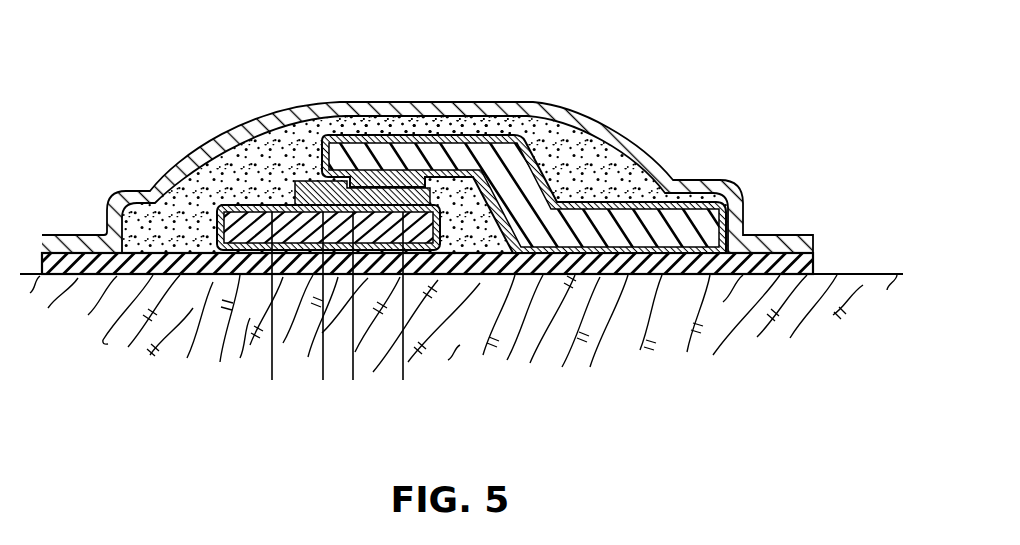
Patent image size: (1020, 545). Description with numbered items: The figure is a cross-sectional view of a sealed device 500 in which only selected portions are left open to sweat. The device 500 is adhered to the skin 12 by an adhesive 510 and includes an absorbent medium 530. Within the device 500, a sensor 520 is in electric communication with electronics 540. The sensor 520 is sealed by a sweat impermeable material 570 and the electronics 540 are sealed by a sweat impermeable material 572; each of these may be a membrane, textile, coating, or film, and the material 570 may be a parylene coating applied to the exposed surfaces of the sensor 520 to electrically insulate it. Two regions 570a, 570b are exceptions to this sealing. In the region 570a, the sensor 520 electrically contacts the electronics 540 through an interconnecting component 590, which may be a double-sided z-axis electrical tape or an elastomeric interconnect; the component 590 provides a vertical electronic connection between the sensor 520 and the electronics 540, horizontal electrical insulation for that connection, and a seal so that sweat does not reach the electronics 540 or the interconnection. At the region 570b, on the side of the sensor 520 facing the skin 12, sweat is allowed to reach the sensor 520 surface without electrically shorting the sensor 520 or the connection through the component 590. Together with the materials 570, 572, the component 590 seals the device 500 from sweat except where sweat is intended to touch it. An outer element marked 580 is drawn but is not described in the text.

The device 500 is at (122, 58).
The adhesive 510 is at (813, 262).
The sensor 520 is at (211, 156).
The absorbent medium 530 is at (302, 143).
The electronics 540 is at (463, 132).
The sweat impermeable material 570 is at (167, 176).
The region 570a is at (403, 378).
The region 570b is at (323, 378).
The sweat impermeable material 572 is at (626, 203).
The housing 580 is at (574, 108).
The interconnecting component 590 is at (242, 217).
The skin 12 is at (610, 332).